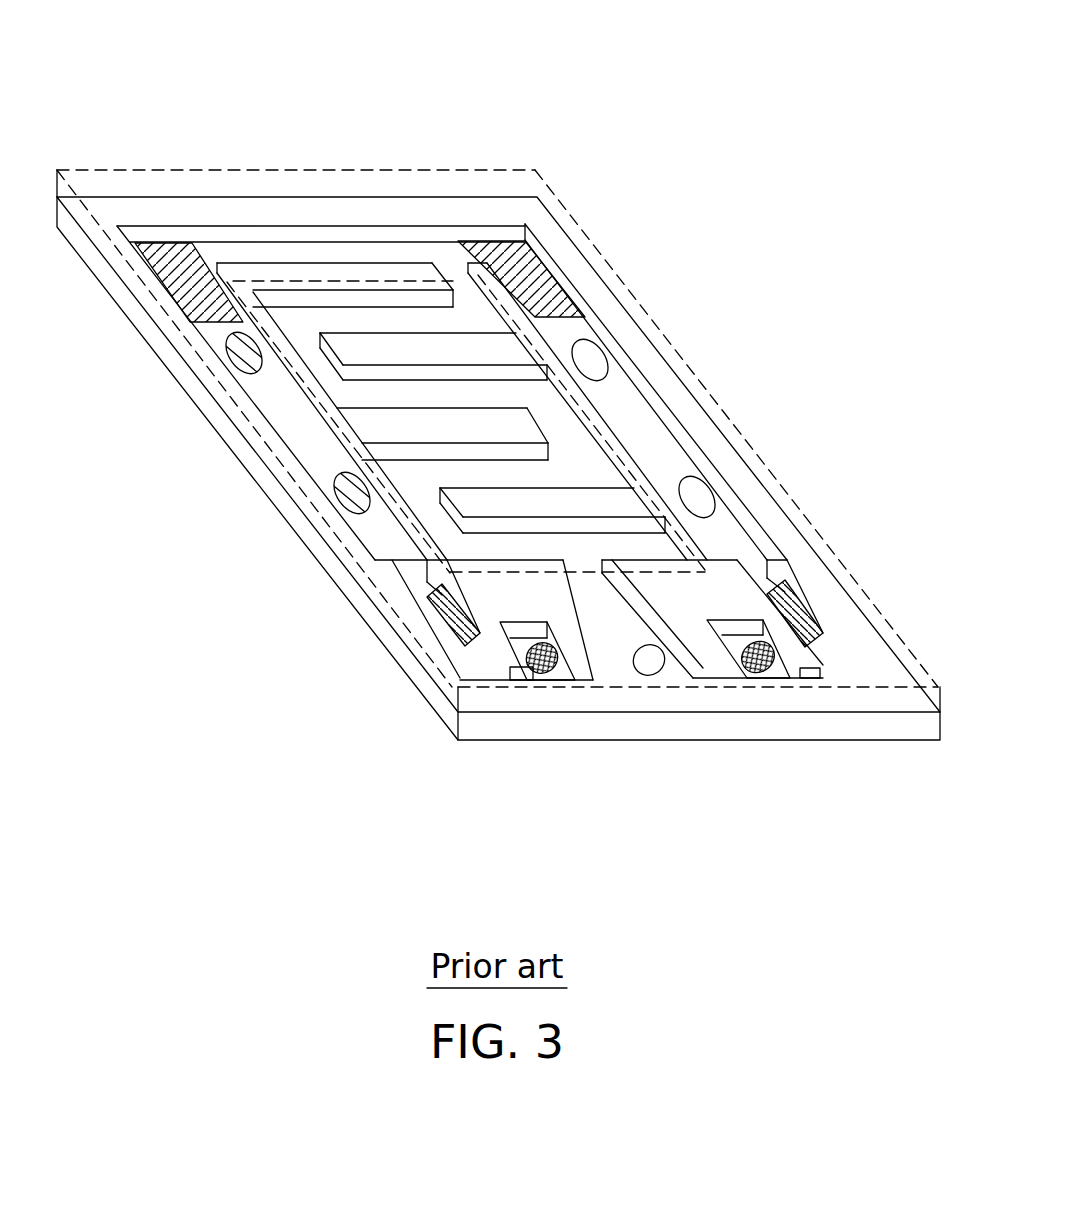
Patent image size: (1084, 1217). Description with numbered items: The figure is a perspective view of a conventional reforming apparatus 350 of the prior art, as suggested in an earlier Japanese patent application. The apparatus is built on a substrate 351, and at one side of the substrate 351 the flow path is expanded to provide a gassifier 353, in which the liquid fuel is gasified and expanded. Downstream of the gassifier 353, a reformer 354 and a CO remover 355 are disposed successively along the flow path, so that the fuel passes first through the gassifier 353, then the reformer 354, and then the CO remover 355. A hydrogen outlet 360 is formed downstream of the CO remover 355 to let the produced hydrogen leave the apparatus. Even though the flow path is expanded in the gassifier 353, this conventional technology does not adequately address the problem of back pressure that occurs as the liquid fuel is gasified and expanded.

The conventional reforming apparatus 350 is at (533, 108).
The substrate 351 is at (290, 505).
The gassifier 353 is at (330, 250).
The reformer 354 is at (497, 412).
The CO remover 355 is at (628, 546).
The hydrogen outlet 360 is at (652, 667).